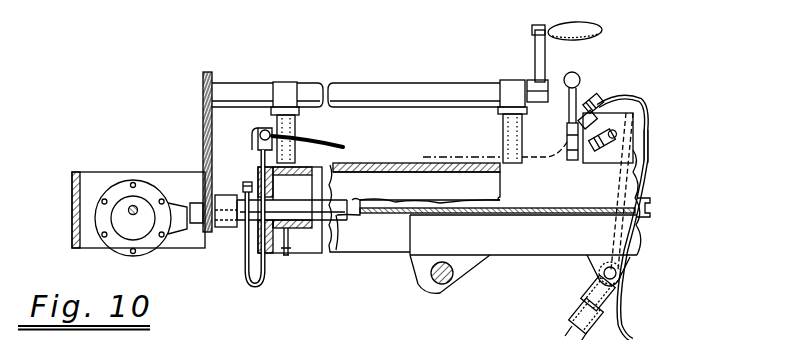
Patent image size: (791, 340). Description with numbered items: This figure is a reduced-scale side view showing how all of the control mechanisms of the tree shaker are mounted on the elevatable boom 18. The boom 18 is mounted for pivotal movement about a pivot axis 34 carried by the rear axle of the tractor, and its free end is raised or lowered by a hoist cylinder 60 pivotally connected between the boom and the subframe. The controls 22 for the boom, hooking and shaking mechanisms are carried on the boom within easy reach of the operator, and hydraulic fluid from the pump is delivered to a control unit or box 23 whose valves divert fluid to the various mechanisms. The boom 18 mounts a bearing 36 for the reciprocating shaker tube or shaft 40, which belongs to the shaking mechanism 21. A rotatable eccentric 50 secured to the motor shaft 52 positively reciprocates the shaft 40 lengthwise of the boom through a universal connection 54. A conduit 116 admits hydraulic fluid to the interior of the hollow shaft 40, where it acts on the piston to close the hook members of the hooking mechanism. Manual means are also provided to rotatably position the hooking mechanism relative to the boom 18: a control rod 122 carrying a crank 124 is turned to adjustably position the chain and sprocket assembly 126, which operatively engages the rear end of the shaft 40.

The elevatable boom 18 is at (383, 163).
The shaking mechanism 21 is at (94, 176).
The controls 22 is at (592, 86).
The control unit or box 23 is at (627, 123).
The pivot axis 34 is at (447, 281).
The bearing 36 is at (291, 203).
The shaker tube or shaft 40 is at (340, 207).
The rotatable eccentric 50 is at (143, 233).
The motor shaft 52 is at (133, 205).
The universal connection 54 is at (227, 228).
The hoist cylinder 60 is at (580, 307).
The conduit 116 is at (248, 284).
The control rod 122 is at (378, 88).
The crank 124 is at (535, 48).
The chain and sprocket assembly 126 is at (203, 133).